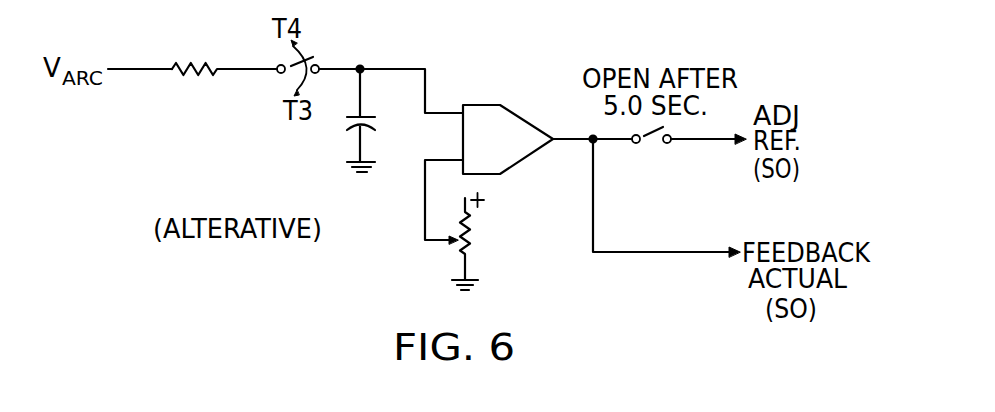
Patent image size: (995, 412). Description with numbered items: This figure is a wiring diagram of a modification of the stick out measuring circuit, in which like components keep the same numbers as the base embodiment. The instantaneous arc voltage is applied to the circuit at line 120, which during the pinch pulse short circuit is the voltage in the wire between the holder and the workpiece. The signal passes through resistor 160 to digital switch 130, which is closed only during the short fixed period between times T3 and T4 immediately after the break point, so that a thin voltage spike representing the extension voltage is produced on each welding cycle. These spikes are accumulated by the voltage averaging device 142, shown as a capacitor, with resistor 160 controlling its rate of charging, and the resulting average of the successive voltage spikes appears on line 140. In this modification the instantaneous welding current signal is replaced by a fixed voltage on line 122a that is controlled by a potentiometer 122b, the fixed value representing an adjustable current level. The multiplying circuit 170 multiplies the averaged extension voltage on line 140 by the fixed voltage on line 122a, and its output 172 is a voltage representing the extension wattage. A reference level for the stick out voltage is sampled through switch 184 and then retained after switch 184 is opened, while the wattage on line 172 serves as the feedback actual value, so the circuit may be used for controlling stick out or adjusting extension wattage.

The line 120 is at (137, 69).
The resistor 160 is at (188, 63).
The digital switch 130 is at (312, 60).
The line 140 is at (412, 69).
The voltage averaging device 142 is at (350, 123).
The multiplying circuit 170 is at (500, 105).
The line 122a is at (425, 185).
The potentiometer 122b is at (470, 237).
The output 172 is at (593, 212).
The switch 184 is at (648, 133).